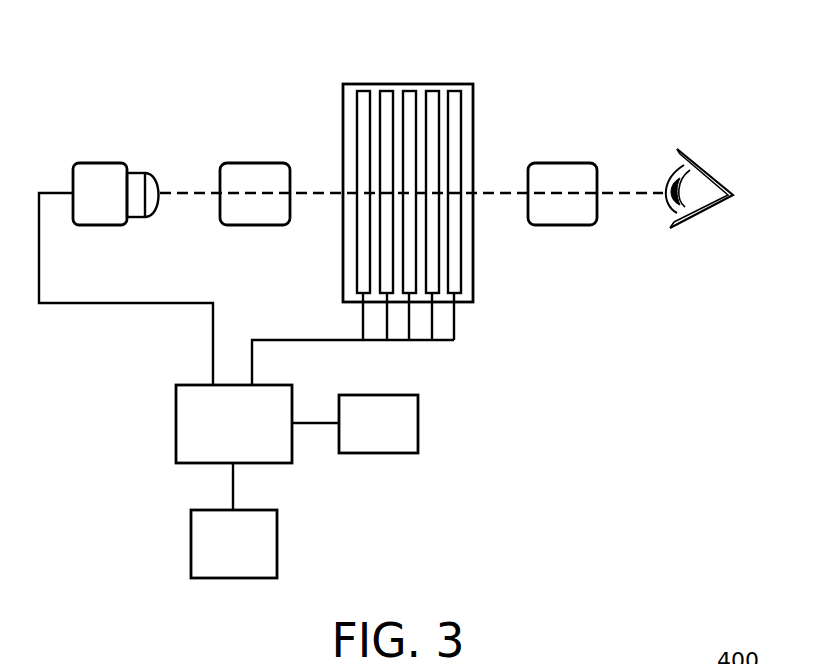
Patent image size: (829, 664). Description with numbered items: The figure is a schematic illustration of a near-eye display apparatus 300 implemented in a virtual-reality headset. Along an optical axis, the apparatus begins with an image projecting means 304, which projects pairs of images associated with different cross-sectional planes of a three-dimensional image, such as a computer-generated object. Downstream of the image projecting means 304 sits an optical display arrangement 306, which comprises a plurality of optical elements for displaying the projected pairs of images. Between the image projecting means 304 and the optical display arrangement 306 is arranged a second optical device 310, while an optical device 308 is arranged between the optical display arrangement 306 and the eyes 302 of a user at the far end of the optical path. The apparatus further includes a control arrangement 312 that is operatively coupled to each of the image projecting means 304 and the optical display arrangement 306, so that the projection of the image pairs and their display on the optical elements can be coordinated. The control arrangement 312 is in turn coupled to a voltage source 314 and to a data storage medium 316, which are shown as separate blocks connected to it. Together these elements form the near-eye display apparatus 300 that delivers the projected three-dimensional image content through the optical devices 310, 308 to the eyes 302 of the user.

The near-eye display apparatus 300 is at (672, 75).
The eyes 302 is at (706, 223).
The image projecting means 304 is at (116, 151).
The optical display arrangement 306 is at (455, 212).
The optical device 308 is at (562, 151).
The second optical device 310 is at (255, 151).
The control arrangement 312 is at (254, 440).
The voltage source 314 is at (399, 440).
The data storage medium 316 is at (213, 560).